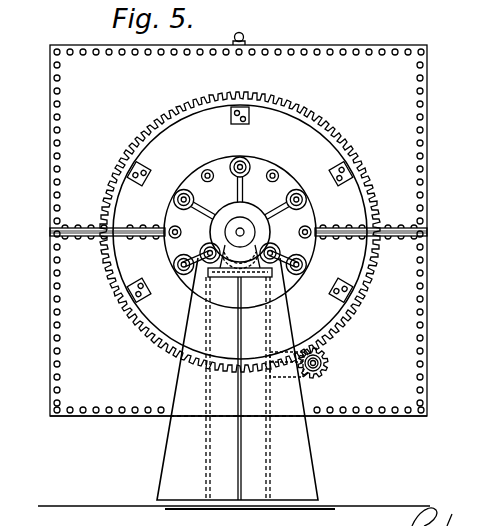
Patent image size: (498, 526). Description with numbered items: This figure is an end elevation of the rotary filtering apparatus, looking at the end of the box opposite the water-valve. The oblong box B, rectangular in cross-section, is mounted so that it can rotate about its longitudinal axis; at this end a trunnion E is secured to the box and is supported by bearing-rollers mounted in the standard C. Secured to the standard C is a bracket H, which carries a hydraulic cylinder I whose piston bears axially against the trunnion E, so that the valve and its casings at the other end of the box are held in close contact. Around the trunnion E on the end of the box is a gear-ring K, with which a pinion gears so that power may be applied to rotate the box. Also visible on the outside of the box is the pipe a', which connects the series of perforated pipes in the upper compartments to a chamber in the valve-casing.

The pipe a' is at (252, 30).
The oblong box B is at (437, 81).
The gear-ring K is at (292, 107).
The trunnion E is at (240, 232).
The bracket H is at (240, 274).
The hydraulic cylinder I is at (328, 362).
The standard C is at (168, 447).